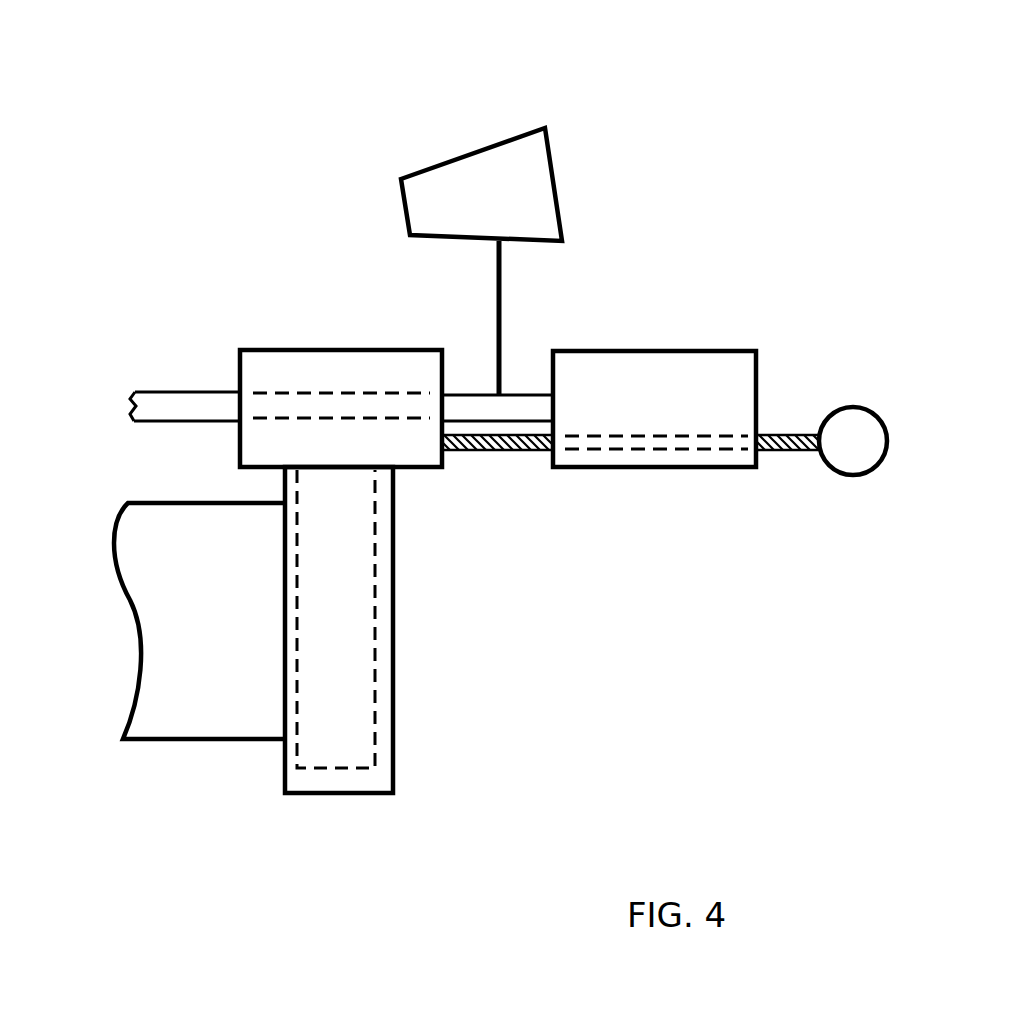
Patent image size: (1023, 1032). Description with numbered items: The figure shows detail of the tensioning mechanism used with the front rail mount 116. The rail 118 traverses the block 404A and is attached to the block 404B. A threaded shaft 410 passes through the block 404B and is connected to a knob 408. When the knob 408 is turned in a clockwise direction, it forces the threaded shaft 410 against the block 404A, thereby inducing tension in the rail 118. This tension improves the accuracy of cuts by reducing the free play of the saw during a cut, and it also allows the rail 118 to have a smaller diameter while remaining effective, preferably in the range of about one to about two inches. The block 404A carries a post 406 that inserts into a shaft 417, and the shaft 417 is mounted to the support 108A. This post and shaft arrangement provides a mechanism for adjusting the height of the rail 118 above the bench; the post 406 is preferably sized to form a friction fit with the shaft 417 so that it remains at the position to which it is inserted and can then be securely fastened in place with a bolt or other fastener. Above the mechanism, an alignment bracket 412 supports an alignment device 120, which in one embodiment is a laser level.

The front rail mount 116 is at (785, 147).
The alignment device 120 is at (508, 207).
The alignment bracket 412 is at (499, 317).
The block 404A is at (308, 355).
The block 404B is at (657, 367).
The rail 118 is at (190, 407).
The threaded shaft 410 is at (786, 452).
The knob 408 is at (853, 433).
The shaft 417 is at (387, 775).
The post 406 is at (345, 667).
The support 108A is at (239, 622).